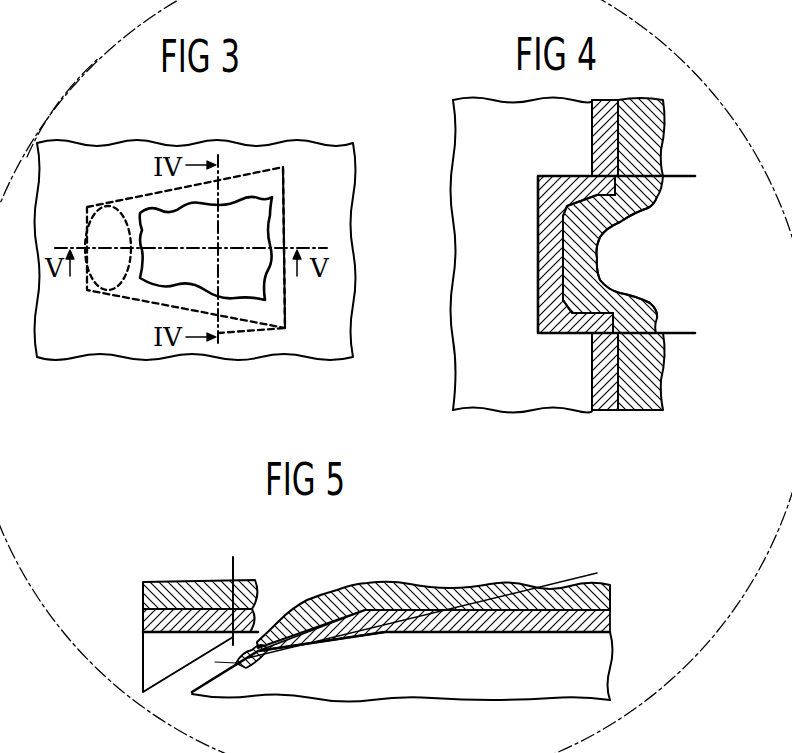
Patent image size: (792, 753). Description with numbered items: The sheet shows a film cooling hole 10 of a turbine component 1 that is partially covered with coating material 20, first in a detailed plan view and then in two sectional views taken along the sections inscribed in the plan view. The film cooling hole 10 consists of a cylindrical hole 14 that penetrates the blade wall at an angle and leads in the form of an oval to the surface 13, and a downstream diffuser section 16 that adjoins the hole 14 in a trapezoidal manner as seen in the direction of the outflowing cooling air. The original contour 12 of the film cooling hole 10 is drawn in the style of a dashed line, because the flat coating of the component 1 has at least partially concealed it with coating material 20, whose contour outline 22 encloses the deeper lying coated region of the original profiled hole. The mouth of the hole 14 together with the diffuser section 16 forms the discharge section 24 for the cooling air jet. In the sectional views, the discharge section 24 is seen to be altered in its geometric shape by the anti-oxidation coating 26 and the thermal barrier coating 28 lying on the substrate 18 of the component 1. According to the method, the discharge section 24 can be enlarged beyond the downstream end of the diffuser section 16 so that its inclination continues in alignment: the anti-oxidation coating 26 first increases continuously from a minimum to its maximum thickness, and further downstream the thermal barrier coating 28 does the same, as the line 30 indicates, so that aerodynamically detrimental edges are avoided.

In FIG. 4, the component 1 is at (483, 255).
In FIG. 5, the component 1 is at (421, 667).
In FIG. 3, the film cooling hole 10 is at (186, 281).
In FIG. 5, the film cooling hole 10 is at (254, 536).
In FIG. 3, the original contour 12 is at (143, 302).
In FIG. 4, the original contour 12 is at (690, 176).
In FIG. 5, the original contour 12 is at (232, 573).
In FIG. 4, the surface 13 is at (592, 144).
In FIG. 5, the surface 13 is at (178, 652).
In FIG. 3, the cylindrical hole 14 is at (123, 203).
In FIG. 5, the cylindrical hole 14 is at (215, 660).
In FIG. 3, the diffuser section 16 is at (238, 214).
In FIG. 4, the diffuser section 16 is at (675, 257).
In FIG. 5, the diffuser section 16 is at (434, 648).
In FIG. 4, the substrate 18 is at (455, 108).
In FIG. 5, the substrate 18 is at (612, 654).
In FIG. 3, the coating material 20 is at (337, 188).
In FIG. 4, the coating material 20 is at (607, 398).
In FIG. 5, the coating material 20 is at (508, 625).
In FIG. 3, the contour outline 22 is at (264, 284).
In FIG. 3, the discharge section 24 is at (238, 262).
In FIG. 4, the discharge section 24 is at (655, 268).
In FIG. 5, the discharge section 24 is at (423, 599).
In FIG. 3, the anti-oxidation coating 26 is at (251, 281).
In FIG. 4, the anti-oxidation coating 26 is at (590, 319).
In FIG. 5, the anti-oxidation coating 26 is at (434, 648).
In FIG. 3, the thermal barrier coating 28 is at (272, 313).
In FIG. 4, the thermal barrier coating 28 is at (648, 205).
In FIG. 5, the thermal barrier coating 28 is at (418, 584).
In FIG. 5, the line 30 is at (503, 584).